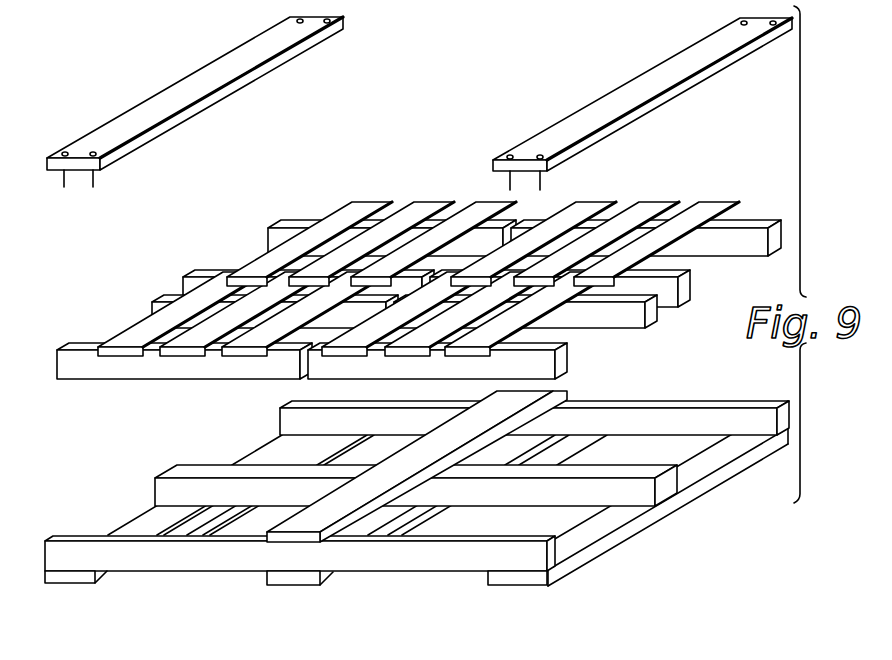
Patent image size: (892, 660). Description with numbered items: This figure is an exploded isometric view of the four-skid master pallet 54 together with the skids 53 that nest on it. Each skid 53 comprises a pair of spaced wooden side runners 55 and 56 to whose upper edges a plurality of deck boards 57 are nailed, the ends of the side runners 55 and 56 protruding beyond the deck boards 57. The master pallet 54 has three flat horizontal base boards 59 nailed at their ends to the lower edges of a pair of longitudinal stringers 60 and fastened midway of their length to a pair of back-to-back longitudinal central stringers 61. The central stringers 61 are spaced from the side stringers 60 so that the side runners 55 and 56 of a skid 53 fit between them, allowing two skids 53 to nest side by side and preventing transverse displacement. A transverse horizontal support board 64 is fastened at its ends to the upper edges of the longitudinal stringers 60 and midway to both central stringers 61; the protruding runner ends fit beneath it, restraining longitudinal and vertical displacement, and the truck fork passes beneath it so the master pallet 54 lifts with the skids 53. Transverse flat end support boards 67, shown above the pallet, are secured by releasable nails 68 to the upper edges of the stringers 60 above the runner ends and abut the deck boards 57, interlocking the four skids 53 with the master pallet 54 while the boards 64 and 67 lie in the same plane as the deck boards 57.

The skid 53 is at (419, 286).
The master pallet 54 is at (417, 477).
The side runner 55 is at (558, 365).
The side runner 56 is at (648, 322).
The deck boards 57 is at (380, 200).
The base boards 59 is at (417, 477).
The longitudinal stringers 60 is at (470, 541).
The central stringers 61 is at (634, 452).
The transverse horizontal support board 64 is at (402, 459).
The transverse end support boards 67 is at (178, 85).
The nails 68 is at (97, 176).